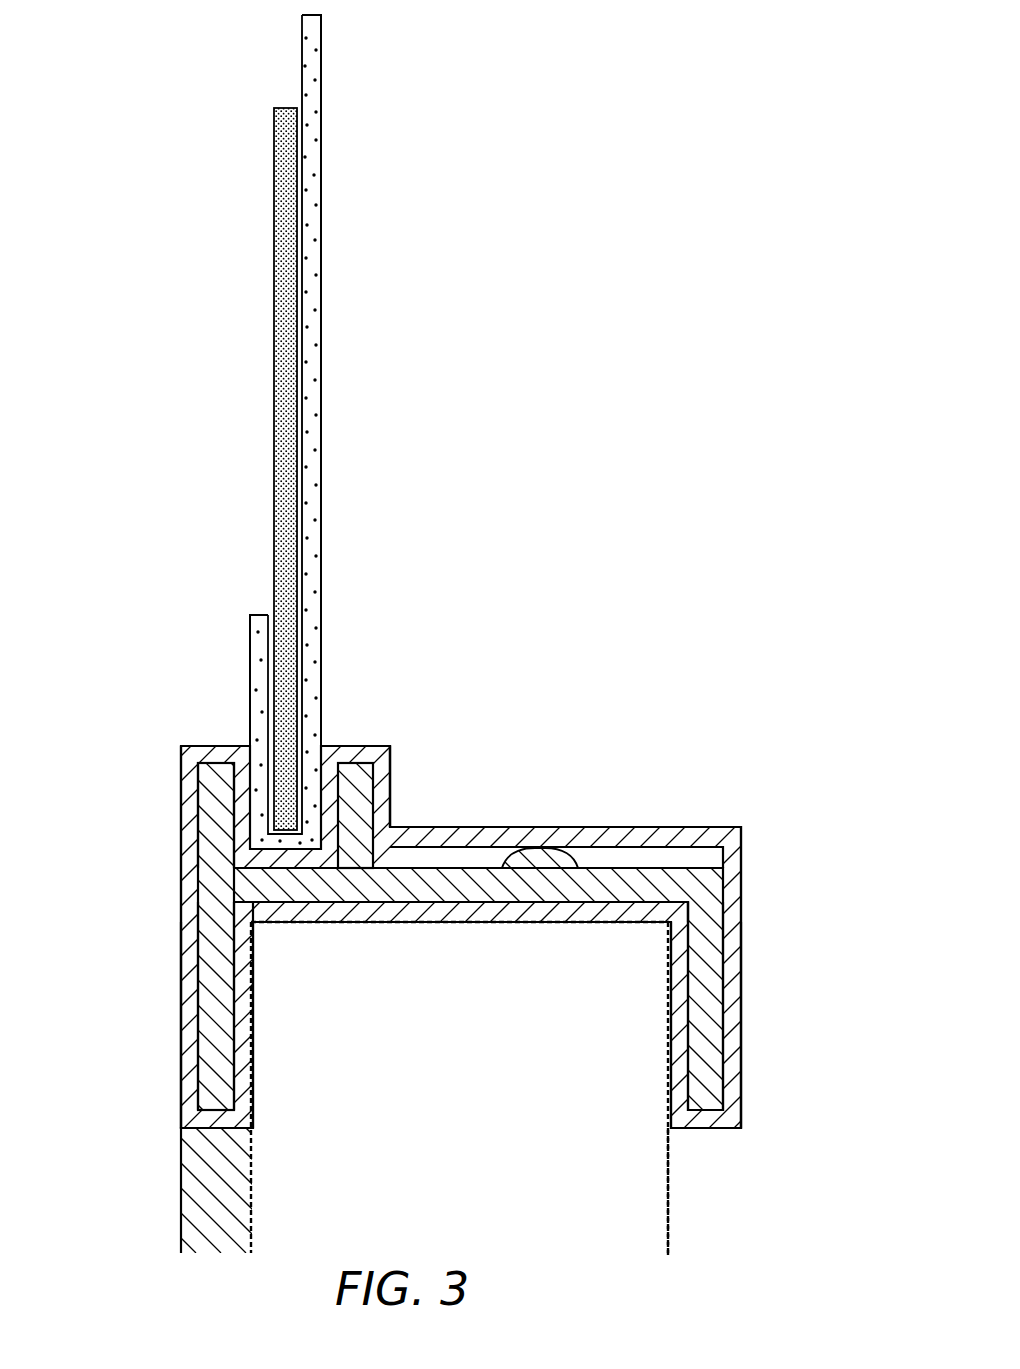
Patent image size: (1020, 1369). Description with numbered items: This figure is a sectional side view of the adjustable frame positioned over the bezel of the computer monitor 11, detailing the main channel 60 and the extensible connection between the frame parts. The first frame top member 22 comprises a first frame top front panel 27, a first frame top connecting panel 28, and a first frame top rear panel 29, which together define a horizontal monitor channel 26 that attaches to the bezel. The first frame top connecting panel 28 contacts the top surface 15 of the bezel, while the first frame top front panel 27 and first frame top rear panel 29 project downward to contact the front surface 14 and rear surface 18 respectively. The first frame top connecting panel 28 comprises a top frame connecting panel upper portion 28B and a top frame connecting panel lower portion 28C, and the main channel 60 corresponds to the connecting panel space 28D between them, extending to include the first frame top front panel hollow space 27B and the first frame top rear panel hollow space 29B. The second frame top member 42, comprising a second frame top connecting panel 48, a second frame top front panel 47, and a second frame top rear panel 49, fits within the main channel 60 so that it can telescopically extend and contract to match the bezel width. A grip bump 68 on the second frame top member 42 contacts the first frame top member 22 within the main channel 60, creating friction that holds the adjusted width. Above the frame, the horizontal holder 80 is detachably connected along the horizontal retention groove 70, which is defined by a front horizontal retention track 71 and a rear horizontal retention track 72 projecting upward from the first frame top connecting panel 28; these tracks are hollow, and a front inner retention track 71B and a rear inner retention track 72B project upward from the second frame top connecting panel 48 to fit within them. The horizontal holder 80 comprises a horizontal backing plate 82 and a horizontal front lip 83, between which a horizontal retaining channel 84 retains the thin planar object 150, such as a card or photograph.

The computer monitor 11 is at (670, 1208).
The front surface 14 is at (253, 1182).
The top surface 15 is at (582, 923).
The rear surface 18 is at (670, 1168).
The first frame top member 22 is at (187, 885).
The horizontal monitor channel 26 is at (255, 1030).
The first frame top front panel 27 is at (183, 1037).
The first frame top front panel hollow space 27B is at (240, 1000).
The first frame top connecting panel 28 is at (638, 827).
The top frame connecting panel upper portion 28B is at (687, 833).
The top frame connecting panel lower portion 28C is at (652, 905).
The connecting panel space 28D is at (707, 866).
The first frame top rear panel 29 is at (740, 1002).
The first frame top rear panel hollow space 29B is at (687, 1020).
The second frame top member 42 is at (210, 938).
The second frame top front panel 47 is at (218, 1045).
The second frame top connecting panel 48 is at (375, 885).
The second frame top rear panel 49 is at (703, 1083).
The main channel 60 is at (200, 910).
The grip bump 68 is at (543, 847).
The horizontal retention groove 70 is at (323, 760).
The front horizontal retention track 71 is at (215, 745).
The front inner retention track 71B is at (215, 797).
The rear horizontal retention track 72 is at (357, 755).
The rear inner retention track 72B is at (362, 788).
The horizontal holder 80 is at (313, 340).
The horizontal backing plate 82 is at (308, 59).
The horizontal front lip 83 is at (256, 616).
The horizontal retaining channel 84 is at (303, 643).
The thin planar object 150 is at (275, 372).